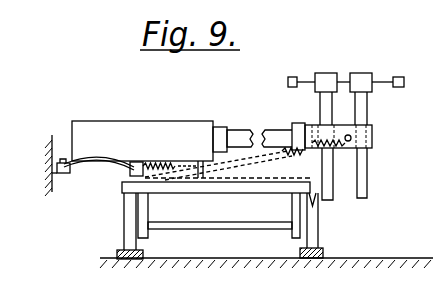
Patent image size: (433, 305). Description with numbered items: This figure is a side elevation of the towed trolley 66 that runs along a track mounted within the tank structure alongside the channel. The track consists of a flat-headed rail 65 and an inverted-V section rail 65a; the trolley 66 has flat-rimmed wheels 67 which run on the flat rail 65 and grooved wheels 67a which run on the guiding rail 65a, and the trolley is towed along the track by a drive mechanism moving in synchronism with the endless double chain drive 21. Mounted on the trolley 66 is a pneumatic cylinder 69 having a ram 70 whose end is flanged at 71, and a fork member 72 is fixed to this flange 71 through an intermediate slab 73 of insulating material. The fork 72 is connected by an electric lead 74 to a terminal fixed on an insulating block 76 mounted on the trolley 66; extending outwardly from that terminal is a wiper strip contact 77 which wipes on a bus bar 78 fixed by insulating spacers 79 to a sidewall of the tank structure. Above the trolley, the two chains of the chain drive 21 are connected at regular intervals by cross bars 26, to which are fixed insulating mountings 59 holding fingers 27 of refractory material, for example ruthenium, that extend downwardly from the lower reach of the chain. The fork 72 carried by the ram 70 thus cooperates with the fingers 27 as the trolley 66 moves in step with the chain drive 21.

The endless double chain drive 21 is at (291, 78).
The cross bar 26 is at (344, 81).
The finger 27 is at (325, 181).
The insulating mounting 59 is at (331, 77).
The flat-headed rail 65 is at (124, 257).
The inverted-V section rail 65a is at (310, 256).
The towed trolley 66 is at (237, 188).
The flat-rimmed wheel 67 is at (128, 233).
The grooved wheel 67a is at (318, 236).
The pneumatic cylinder 69 is at (178, 128).
The ram 70 is at (234, 133).
The flange 71 is at (291, 132).
The fork member 72 is at (342, 130).
The intermediate slab of insulating material 73 is at (299, 124).
The electric lead 74 is at (288, 152).
The insulating block 76 is at (135, 174).
The wiper strip contact 77 is at (105, 162).
The bus bar 78 is at (63, 173).
The insulating spacer 79 is at (58, 172).